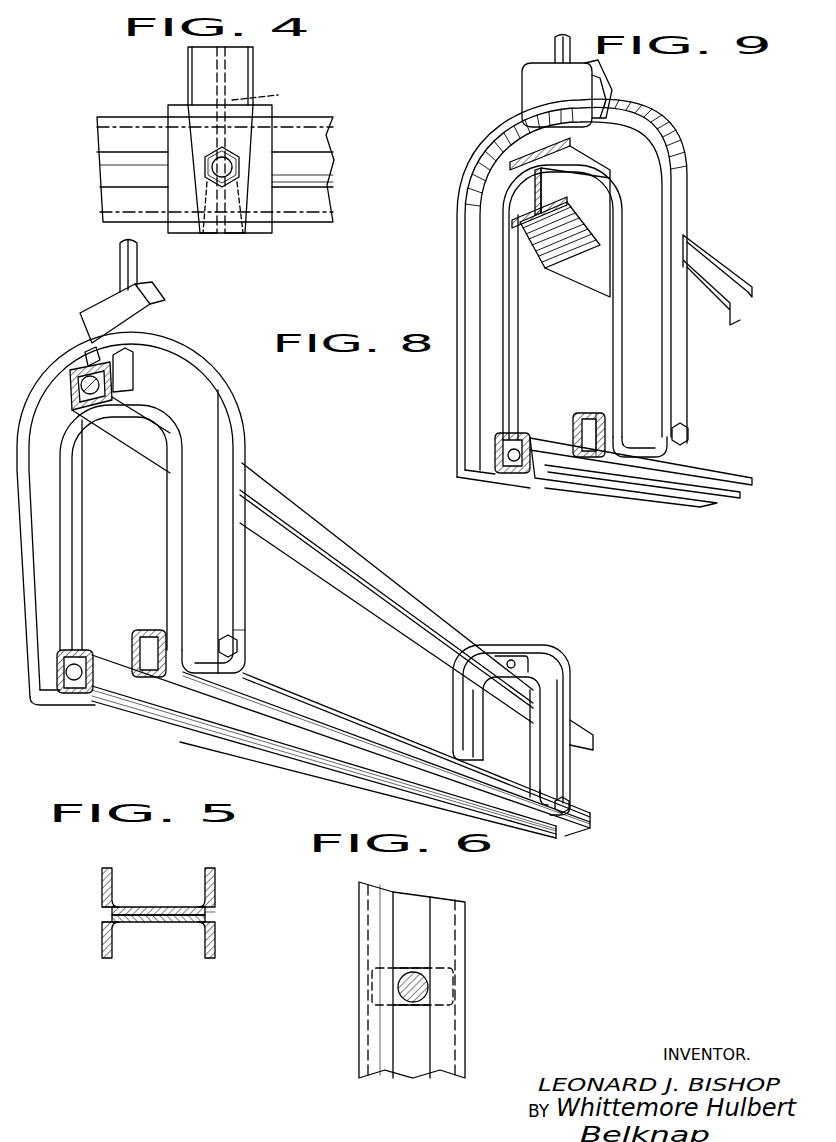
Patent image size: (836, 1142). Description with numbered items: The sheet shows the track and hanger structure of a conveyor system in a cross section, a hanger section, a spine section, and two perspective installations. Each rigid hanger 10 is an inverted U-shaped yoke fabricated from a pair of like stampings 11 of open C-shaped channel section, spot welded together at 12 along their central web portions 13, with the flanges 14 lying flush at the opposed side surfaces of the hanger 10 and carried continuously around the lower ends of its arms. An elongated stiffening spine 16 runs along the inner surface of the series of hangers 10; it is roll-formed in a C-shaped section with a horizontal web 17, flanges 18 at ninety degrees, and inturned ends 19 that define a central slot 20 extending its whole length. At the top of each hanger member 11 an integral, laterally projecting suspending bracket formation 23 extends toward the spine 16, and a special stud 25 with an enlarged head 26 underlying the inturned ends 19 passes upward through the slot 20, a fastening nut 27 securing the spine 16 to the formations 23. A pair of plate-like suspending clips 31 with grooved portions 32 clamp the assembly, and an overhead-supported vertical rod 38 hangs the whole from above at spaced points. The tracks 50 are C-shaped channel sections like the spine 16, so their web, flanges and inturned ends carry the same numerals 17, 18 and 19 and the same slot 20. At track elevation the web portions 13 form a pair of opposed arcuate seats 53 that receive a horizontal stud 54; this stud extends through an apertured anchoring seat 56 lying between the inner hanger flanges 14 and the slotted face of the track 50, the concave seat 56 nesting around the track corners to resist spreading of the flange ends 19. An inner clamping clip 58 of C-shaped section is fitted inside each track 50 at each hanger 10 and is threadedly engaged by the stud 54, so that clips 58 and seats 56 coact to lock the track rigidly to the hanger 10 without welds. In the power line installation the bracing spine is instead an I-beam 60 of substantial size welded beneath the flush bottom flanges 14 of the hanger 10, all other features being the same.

In FIG. 4, the hanger 10 is at (188, 63).
In FIG. 8, the hanger 10 is at (246, 604).
In FIG. 5, the hanger 10 is at (218, 918).
In FIG. 5, the stamping 11 is at (106, 924).
In FIG. 5, the spot weld 12 is at (180, 921).
In FIG. 4, the central web portion 13 is at (267, 94).
In FIG. 5, the central web portion 13 is at (158, 906).
In FIG. 4, the flange 14 is at (196, 77).
In FIG. 9, the flange 14 is at (520, 215).
In FIG. 8, the flange 14 is at (234, 456).
In FIG. 5, the flange 14 is at (214, 880).
In FIG. 9, the stiffening spine 16 is at (717, 280).
In FIG. 8, the stiffening spine 16 is at (246, 467).
In FIG. 6, the stiffening spine 16 is at (468, 1034).
In FIG. 4, the horizontal web 17 is at (325, 166).
In FIG. 8, the horizontal web 17 is at (280, 738).
In FIG. 6, the horizontal web 17 is at (425, 946).
In FIG. 8, the flange 18 is at (148, 683).
In FIG. 6, the flange 18 is at (359, 976).
In FIG. 4, the inturned end 19 is at (112, 141).
In FIG. 8, the inturned end 19 is at (92, 400).
In FIG. 6, the inturned end 19 is at (383, 930).
In FIG. 4, the central slot 20 is at (118, 186).
In FIG. 8, the central slot 20 is at (165, 682).
In FIG. 8, the suspending bracket formation 23 is at (127, 390).
In FIG. 6, the stud 25 is at (415, 1001).
In FIG. 8, the enlarged head 26 is at (92, 400).
In FIG. 6, the enlarged head 26 is at (455, 970).
In FIG. 8, the fastening nut 27 is at (90, 362).
In FIG. 9, the suspending clip 31 is at (540, 100).
In FIG. 8, the suspending clip 31 is at (140, 328).
In FIG. 9, the grooved portion 32 is at (604, 86).
In FIG. 9, the vertical rod 38 is at (556, 52).
In FIG. 8, the vertical rod 38 is at (138, 279).
In FIG. 4, the track 50 is at (330, 138).
In FIG. 9, the track 50 is at (672, 492).
In FIG. 8, the track 50 is at (140, 634).
In FIG. 4, the arcuate seat 53 is at (232, 175).
In FIG. 9, the arcuate seat 53 is at (490, 465).
In FIG. 8, the arcuate seat 53 is at (205, 658).
In FIG. 4, the stud 54 is at (241, 168).
In FIG. 9, the stud 54 is at (689, 432).
In FIG. 4, the anchoring seat 56 is at (302, 182).
In FIG. 9, the anchoring seat 56 is at (605, 413).
In FIG. 8, the anchoring seat 56 is at (80, 705).
In FIG. 9, the inner clamping clip 58 is at (580, 414).
In FIG. 9, the I-beam spine 60 is at (584, 280).